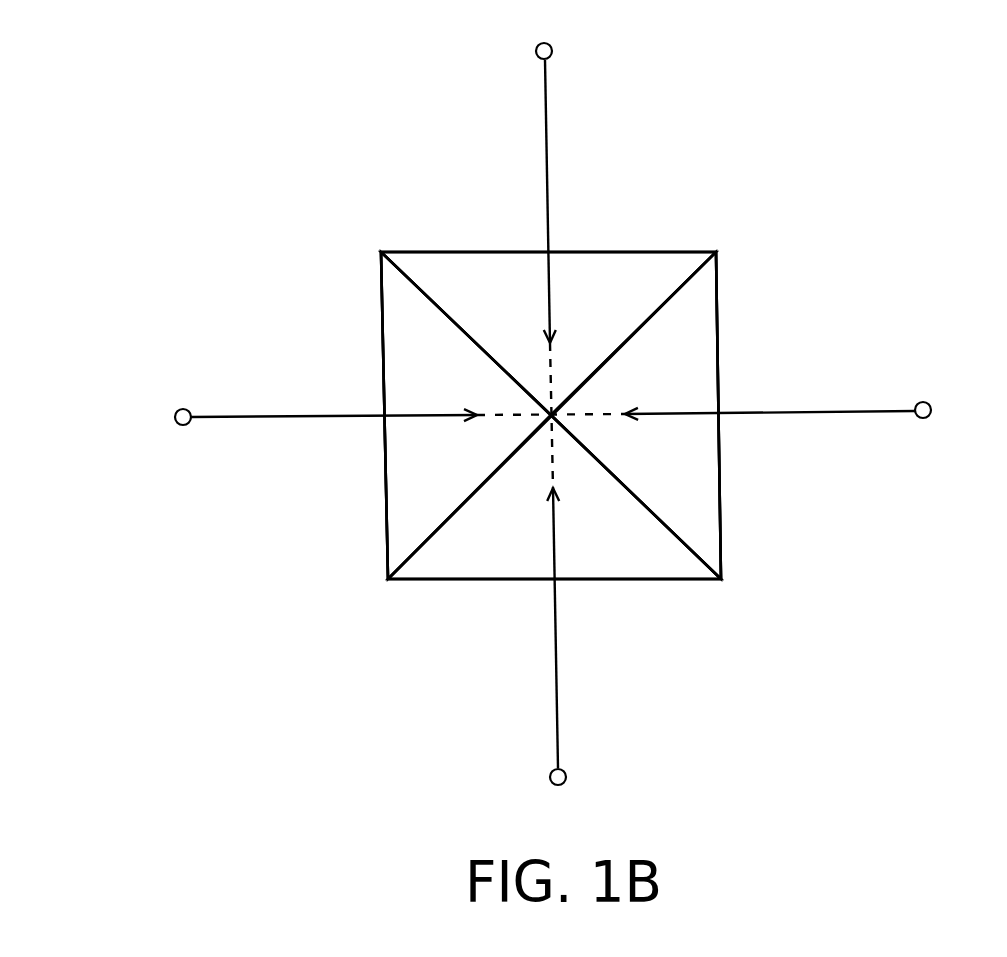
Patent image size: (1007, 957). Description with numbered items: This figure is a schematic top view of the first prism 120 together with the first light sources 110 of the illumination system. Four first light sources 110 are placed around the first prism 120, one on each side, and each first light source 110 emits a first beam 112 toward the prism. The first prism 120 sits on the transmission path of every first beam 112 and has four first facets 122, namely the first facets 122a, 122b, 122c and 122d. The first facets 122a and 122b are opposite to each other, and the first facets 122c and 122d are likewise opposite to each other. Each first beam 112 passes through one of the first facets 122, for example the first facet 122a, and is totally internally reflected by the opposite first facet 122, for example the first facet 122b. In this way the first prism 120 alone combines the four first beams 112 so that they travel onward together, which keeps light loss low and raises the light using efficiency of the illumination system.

The first light source 110 is at (535, 51).
The first beam 112 is at (545, 133).
The first prism 120 is at (773, 567).
The first facets 122 is at (551, 415).
The first facet 122a is at (598, 527).
The first facet 122b is at (597, 292).
The first facet 122c is at (443, 362).
The first facet 122d is at (660, 355).